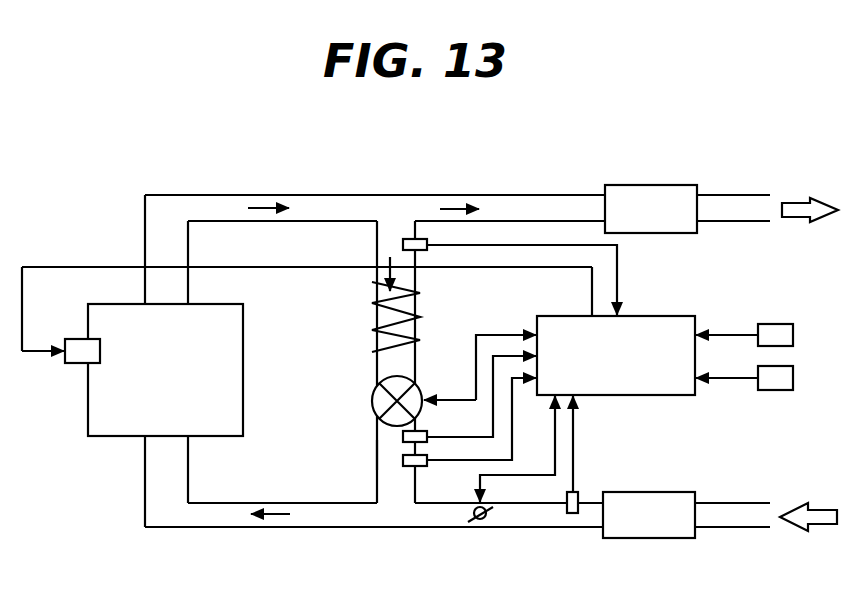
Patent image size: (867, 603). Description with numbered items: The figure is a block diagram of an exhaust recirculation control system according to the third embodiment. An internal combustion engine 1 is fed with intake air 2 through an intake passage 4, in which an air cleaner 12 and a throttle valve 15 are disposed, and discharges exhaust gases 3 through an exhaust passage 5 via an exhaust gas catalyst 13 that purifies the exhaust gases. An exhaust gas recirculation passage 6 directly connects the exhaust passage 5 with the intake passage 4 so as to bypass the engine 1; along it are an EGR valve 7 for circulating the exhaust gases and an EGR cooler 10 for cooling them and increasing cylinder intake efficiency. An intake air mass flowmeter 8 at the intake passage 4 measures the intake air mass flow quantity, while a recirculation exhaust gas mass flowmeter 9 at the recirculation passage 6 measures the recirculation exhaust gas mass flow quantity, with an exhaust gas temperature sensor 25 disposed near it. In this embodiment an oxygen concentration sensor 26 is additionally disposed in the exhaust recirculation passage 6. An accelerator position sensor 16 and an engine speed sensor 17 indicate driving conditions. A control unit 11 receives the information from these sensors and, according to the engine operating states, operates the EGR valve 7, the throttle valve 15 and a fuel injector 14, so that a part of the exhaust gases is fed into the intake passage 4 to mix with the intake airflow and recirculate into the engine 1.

The internal combustion engine 1 is at (203, 304).
The intake air 2 is at (817, 505).
The exhaust gases 3 is at (803, 200).
The intake passage 4 is at (520, 527).
The exhaust passage 5 is at (545, 195).
The exhaust gas recirculation passage 6 is at (377, 457).
The EGR valve 7 is at (372, 400).
The intake air mass flowmeter 8 is at (575, 492).
The recirculation exhaust gas mass flowmeter 9 is at (427, 433).
The EGR cooler 10 is at (418, 300).
The control unit 11 is at (655, 316).
The air cleaner 12 is at (640, 492).
The exhaust gas catalyst 13 is at (640, 185).
The fuel injector 14 is at (78, 363).
The throttle valve 15 is at (480, 522).
The accelerator position sensor 16 is at (793, 333).
The engine speed sensor 17 is at (793, 378).
The exhaust gas temperature sensor 25 is at (410, 468).
The oxygen concentration sensor 26 is at (403, 239).